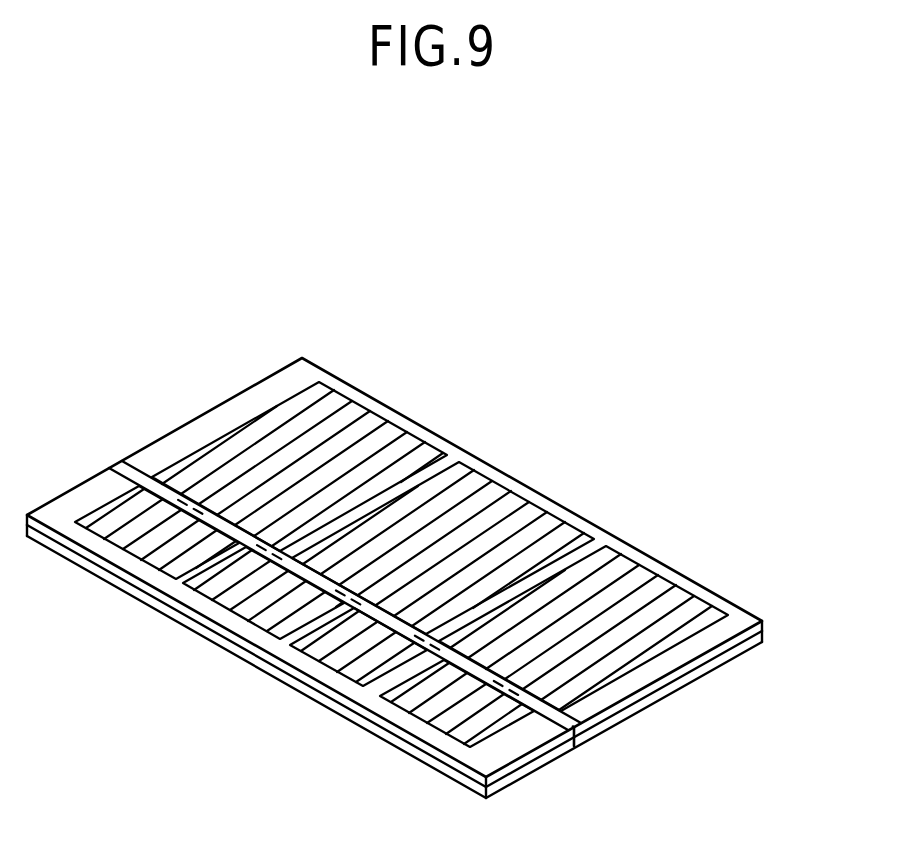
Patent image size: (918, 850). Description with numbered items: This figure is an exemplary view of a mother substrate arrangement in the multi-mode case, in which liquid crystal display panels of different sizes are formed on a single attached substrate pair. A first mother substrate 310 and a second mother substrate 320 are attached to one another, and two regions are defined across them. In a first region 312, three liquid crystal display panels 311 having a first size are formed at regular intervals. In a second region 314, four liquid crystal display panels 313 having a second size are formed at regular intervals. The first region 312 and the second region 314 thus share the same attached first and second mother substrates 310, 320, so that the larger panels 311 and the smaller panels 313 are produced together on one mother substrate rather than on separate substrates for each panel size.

The first mother substrate 310 is at (692, 677).
The second mother substrate 320 is at (730, 645).
The liquid crystal display panel with a first size 311 is at (373, 439).
The first region 312 is at (297, 352).
The liquid crystal display panel with a second size 313 is at (153, 538).
The second region 314 is at (110, 460).